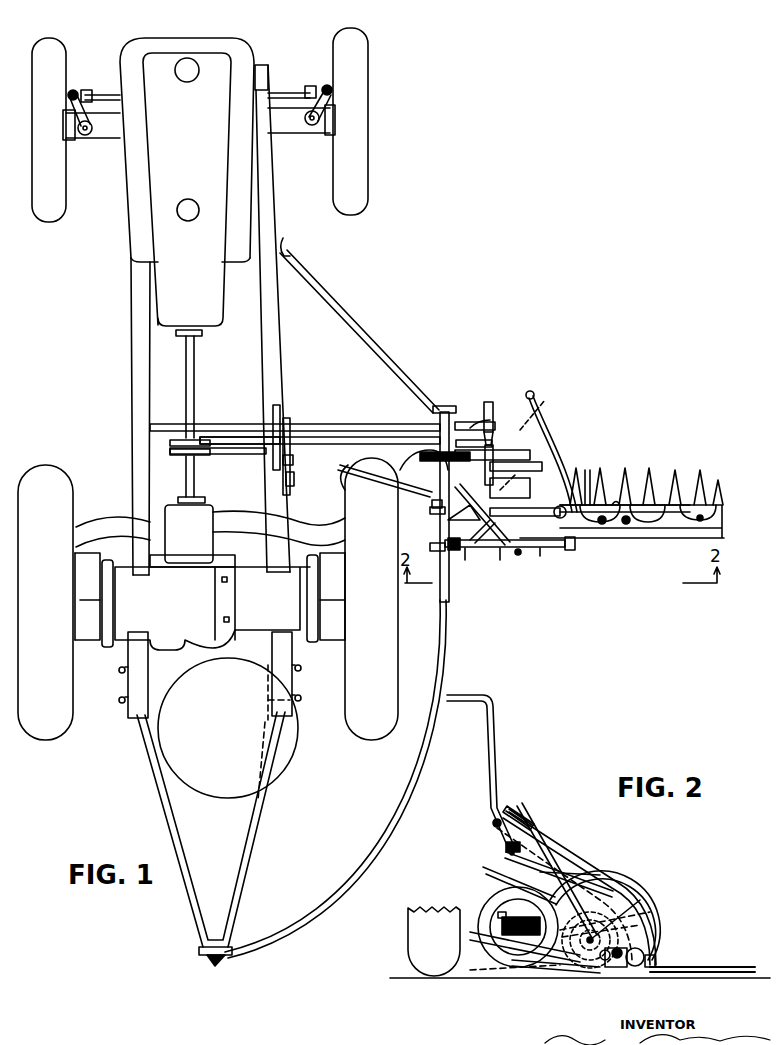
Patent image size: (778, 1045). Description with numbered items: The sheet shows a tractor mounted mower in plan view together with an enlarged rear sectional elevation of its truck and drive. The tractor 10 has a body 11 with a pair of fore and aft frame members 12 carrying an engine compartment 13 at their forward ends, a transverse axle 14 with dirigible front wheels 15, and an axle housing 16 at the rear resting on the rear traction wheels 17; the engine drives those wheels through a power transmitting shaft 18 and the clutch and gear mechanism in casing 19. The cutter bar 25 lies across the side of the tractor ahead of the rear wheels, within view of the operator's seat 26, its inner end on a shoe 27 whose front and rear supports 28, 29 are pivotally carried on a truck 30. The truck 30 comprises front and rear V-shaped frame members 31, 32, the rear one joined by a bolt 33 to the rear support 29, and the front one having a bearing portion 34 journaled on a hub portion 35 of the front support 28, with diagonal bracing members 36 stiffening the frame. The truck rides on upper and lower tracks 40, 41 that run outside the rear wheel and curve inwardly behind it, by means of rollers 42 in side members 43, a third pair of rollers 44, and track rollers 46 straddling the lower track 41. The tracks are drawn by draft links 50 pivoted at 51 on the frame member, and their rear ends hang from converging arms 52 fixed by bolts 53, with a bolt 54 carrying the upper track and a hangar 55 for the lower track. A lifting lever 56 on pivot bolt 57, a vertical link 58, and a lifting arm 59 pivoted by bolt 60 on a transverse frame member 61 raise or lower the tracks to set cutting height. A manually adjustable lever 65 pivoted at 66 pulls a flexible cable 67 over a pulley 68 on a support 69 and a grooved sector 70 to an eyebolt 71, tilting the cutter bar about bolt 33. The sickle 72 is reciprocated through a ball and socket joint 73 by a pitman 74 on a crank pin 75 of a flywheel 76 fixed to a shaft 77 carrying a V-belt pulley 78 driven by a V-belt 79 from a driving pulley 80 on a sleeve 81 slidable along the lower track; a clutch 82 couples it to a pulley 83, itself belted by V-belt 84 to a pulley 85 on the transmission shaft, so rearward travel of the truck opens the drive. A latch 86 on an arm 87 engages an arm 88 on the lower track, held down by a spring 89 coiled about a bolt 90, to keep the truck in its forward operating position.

In FIG. 1, the tractor 10 is at (276, 43).
In FIG. 1, the body 11 is at (131, 229).
In FIG. 1, the frame members 12 is at (133, 339).
In FIG. 1, the engine compartment 13 is at (245, 165).
In FIG. 1, the transverse axle 14 is at (285, 115).
In FIG. 1, the front wheels 15 is at (60, 63).
In FIG. 1, the axle housing 16 is at (180, 600).
In FIG. 1, the rear traction wheels 17 is at (63, 732).
In FIG. 2, the rear traction wheels 17 is at (408, 951).
In FIG. 1, the power transmitting shaft 18 is at (192, 373).
In FIG. 1, the casing 19 is at (189, 539).
In FIG. 1, the cutter bar 25 is at (640, 538).
In FIG. 2, the cutter bar 25 is at (705, 968).
In FIG. 1, the operator's seat 26 is at (228, 739).
In FIG. 1, the shoe 27 is at (540, 482).
In FIG. 2, the shoe 27 is at (598, 978).
In FIG. 1, the front support 28 is at (548, 500).
In FIG. 1, the rear support 29 is at (520, 560).
In FIG. 2, the rear support 29 is at (600, 962).
In FIG. 1, the truck 30 is at (490, 547).
In FIG. 2, the truck 30 is at (590, 905).
In FIG. 1, the front frame member 31 is at (432, 503).
In FIG. 1, the rear frame member 32 is at (470, 552).
In FIG. 2, the rear frame member 32 is at (555, 880).
In FIG. 1, the bolt 33 is at (522, 548).
In FIG. 2, the bolt 33 is at (640, 905).
In FIG. 2, the bearing portion 34 is at (640, 918).
In FIG. 1, the hub portion 35 is at (530, 462).
In FIG. 1, the diagonal bracing members 36 is at (468, 516).
In FIG. 1, the upper track 40 is at (443, 661).
In FIG. 2, the upper track 40 is at (525, 820).
In FIG. 2, the lower track 41 is at (518, 945).
In FIG. 1, the rollers 42 is at (430, 509).
In FIG. 2, the rollers 42 is at (510, 806).
In FIG. 2, the side members 43 is at (528, 812).
In FIG. 1, the third pair of rollers 44 is at (430, 514).
In FIG. 2, the track rollers 46 is at (506, 912).
In FIG. 1, the draft links 50 is at (376, 356).
In FIG. 1, the pivotal connection 51 is at (288, 246).
In FIG. 1, the converging arms 52 is at (240, 858).
In FIG. 1, the bolts 53 is at (160, 680).
In FIG. 1, the bolt 54 is at (220, 962).
In FIG. 1, the hangar 55 is at (205, 962).
In FIG. 1, the lifting lever 56 is at (294, 480).
In FIG. 1, the pivot bolt 57 is at (293, 460).
In FIG. 1, the vertical link 58 is at (290, 424).
In FIG. 1, the lifting arm 59 is at (364, 425).
In FIG. 1, the bolt 60 is at (208, 427).
In FIG. 1, the transverse frame member 61 is at (162, 424).
In FIG. 1, the manually adjustable lever 65 is at (345, 480).
In FIG. 2, the manually adjustable lever 65 is at (492, 742).
In FIG. 2, the pivot 66 is at (493, 823).
In FIG. 2, the flexible cable 67 is at (580, 880).
In FIG. 1, the pulley 68 is at (456, 550).
In FIG. 2, the pulley 68 is at (506, 848).
In FIG. 2, the support 69 is at (508, 856).
In FIG. 2, the grooved sector 70 is at (612, 905).
In FIG. 1, the eyebolt 71 is at (575, 538).
In FIG. 2, the eyebolt 71 is at (655, 964).
In FIG. 1, the sickle 72 is at (650, 480).
In FIG. 1, the ball and socket joint 73 is at (624, 492).
In FIG. 1, the pitman 74 is at (545, 548).
In FIG. 1, the crank pin 75 is at (505, 555).
In FIG. 1, the flywheel 76 is at (588, 500).
In FIG. 1, the shaft 77 is at (545, 455).
In FIG. 1, the V-belt pulley 78 is at (528, 470).
In FIG. 2, the V-belt pulley 78 is at (610, 955).
In FIG. 1, the V-belt 79 is at (533, 412).
In FIG. 2, the V-belt 79 is at (552, 968).
In FIG. 1, the driving pulley 80 is at (410, 468).
In FIG. 2, the driving pulley 80 is at (515, 945).
In FIG. 1, the sleeve 81 is at (388, 485).
In FIG. 2, the sleeve 81 is at (500, 940).
In FIG. 1, the clutch 82 is at (441, 412).
In FIG. 1, the pulley 83 is at (466, 420).
In FIG. 2, the pulley 83 is at (528, 965).
In FIG. 1, the V-belt 84 is at (246, 450).
In FIG. 1, the pulley 85 is at (205, 456).
In FIG. 1, the latch 86 is at (489, 418).
In FIG. 1, the arm 87 is at (495, 440).
In FIG. 1, the arm 88 is at (452, 420).
In FIG. 1, the spring 89 is at (480, 425).
In FIG. 1, the bolt 90 is at (490, 425).